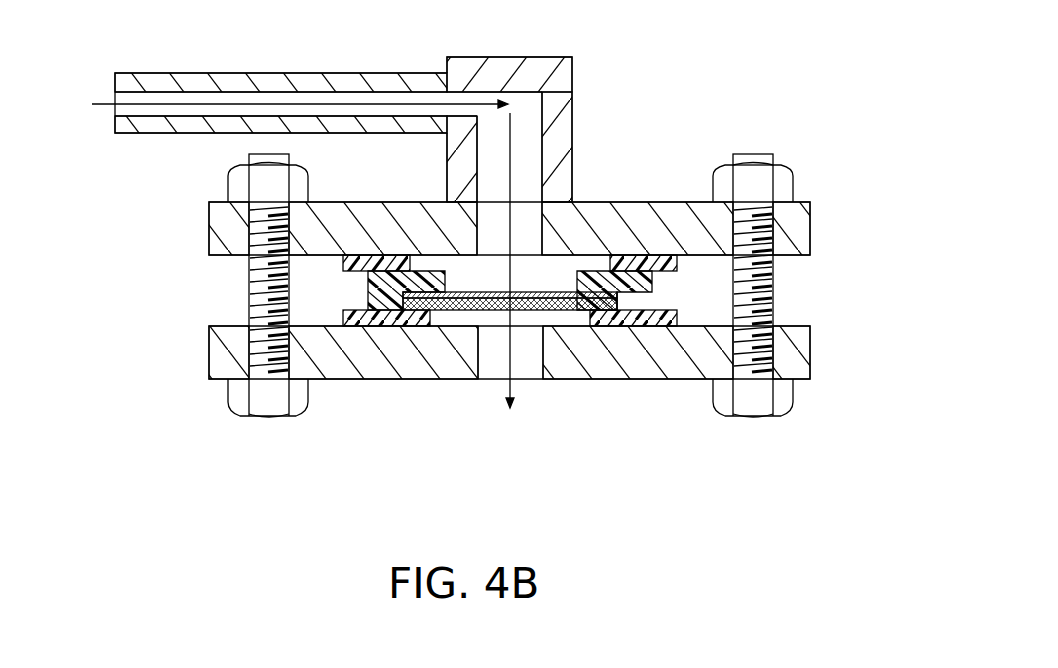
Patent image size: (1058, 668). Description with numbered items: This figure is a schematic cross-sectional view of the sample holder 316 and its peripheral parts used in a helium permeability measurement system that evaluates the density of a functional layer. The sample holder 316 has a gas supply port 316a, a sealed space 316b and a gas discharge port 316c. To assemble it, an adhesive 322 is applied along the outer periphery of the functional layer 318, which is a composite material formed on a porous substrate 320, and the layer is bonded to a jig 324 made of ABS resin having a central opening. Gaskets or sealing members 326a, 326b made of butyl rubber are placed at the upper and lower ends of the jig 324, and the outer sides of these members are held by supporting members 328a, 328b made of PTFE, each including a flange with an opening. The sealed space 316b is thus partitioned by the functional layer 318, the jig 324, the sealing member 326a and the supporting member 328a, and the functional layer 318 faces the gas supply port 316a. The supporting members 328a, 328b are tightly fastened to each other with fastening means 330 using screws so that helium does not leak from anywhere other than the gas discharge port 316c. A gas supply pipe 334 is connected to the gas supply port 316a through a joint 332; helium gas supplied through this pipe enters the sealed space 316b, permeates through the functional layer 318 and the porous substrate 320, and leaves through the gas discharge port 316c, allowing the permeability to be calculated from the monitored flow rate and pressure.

The sample holder 316 is at (718, 63).
The gas supply port 316a is at (557, 278).
The sealed space 316b is at (452, 303).
The gas discharge port 316c is at (468, 368).
The functional layer 318 is at (578, 272).
The porous substrate 320 is at (572, 313).
The adhesive 322 is at (614, 306).
The jig 324 is at (630, 285).
The sealing member 326a is at (672, 263).
The sealing member 326b is at (672, 318).
The supporting member 328a is at (795, 226).
The supporting member 328b is at (795, 350).
The fastening means 330 is at (753, 417).
The joint 332 is at (495, 72).
The gas supply pipe 334 is at (305, 83).